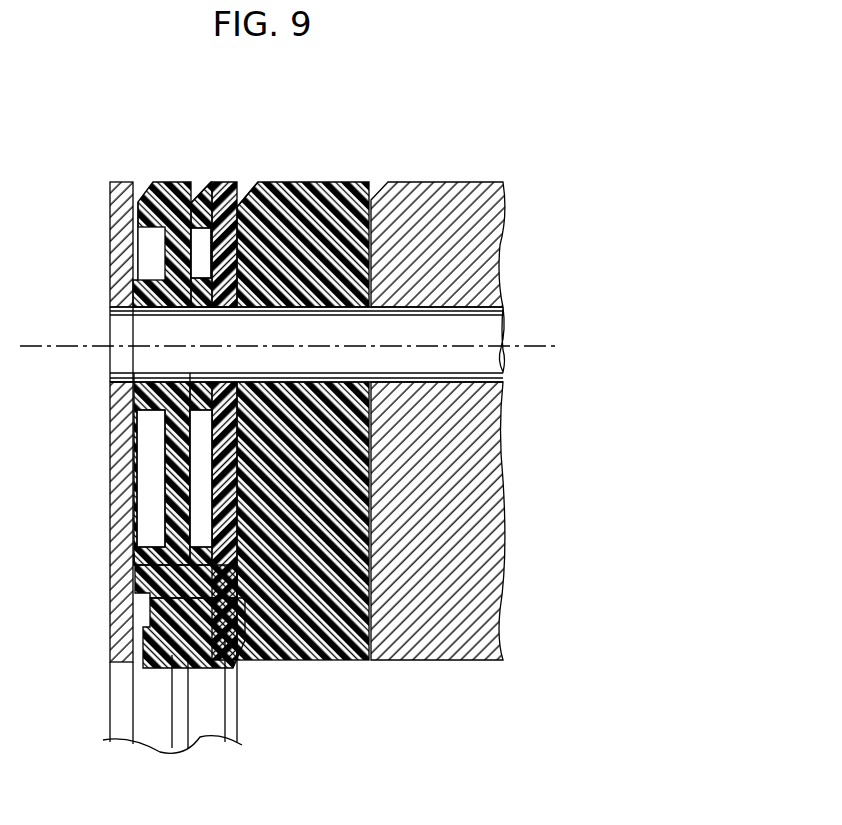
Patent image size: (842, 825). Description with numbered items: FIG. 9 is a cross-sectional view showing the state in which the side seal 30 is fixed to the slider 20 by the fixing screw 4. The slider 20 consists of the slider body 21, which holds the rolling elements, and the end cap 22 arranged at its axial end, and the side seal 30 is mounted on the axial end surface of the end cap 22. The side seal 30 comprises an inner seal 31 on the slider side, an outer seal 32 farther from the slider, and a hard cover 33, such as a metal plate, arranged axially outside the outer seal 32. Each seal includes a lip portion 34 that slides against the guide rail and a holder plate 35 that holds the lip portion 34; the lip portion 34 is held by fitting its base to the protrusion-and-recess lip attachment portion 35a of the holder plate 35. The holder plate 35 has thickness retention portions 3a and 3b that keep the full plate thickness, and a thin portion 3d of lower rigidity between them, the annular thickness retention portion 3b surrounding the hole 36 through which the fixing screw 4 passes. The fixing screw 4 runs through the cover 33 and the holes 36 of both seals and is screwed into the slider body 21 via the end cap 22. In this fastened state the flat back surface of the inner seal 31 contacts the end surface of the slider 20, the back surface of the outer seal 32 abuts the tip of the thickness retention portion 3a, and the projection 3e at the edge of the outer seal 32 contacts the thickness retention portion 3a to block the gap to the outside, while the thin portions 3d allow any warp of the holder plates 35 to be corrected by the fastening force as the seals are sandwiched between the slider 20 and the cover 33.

The fixing screw 4 is at (470, 329).
The slider 20 is at (445, 103).
The slider body 21 is at (410, 182).
The end cap 22 is at (323, 182).
The side seal 30 is at (105, 103).
The inner seal 31 is at (220, 182).
The outer seal 32 is at (168, 182).
The cover 33 is at (120, 182).
The lip portion 34 is at (150, 655).
The holder plate 35 is at (212, 452).
The lip attachment portion 35a is at (140, 604).
The hole 36 is at (205, 309).
The thickness retention portion 3a is at (142, 203).
The thickness retention portion 3b is at (134, 396).
The thin portion 3d is at (210, 247).
The projection 3e is at (200, 182).